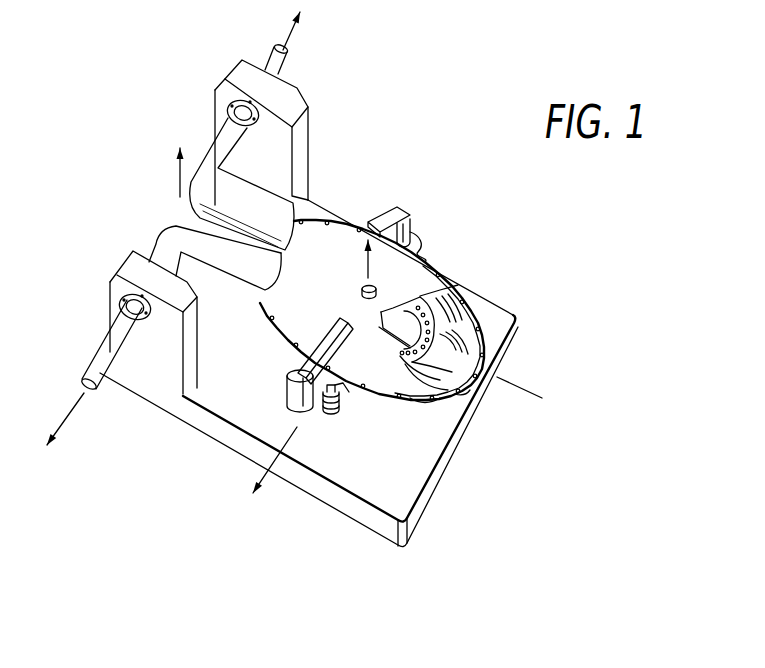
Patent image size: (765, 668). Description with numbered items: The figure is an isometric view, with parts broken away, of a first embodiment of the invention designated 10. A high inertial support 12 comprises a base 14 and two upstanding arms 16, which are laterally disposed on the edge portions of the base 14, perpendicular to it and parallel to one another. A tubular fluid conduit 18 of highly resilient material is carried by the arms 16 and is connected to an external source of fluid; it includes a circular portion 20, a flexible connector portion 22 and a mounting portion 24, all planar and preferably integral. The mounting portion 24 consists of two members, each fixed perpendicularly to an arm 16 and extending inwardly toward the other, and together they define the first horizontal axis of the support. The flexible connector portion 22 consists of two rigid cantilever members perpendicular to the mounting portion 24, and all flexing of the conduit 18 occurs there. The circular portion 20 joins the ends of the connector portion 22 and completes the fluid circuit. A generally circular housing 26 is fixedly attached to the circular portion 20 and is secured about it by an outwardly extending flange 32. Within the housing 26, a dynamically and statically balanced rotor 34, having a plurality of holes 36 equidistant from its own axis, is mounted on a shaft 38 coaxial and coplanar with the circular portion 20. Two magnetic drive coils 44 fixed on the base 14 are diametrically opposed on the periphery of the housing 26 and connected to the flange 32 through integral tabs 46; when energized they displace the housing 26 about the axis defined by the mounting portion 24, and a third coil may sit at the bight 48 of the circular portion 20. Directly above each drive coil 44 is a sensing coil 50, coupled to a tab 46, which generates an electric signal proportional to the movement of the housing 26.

The first embodiment 10 is at (403, 153).
The high inertial support 12 is at (203, 437).
The base 14 is at (405, 548).
The upstanding arms 16 is at (300, 146).
The fluid conduit 18 is at (222, 115).
The circular portion 20 is at (467, 328).
The flexible connector portion 22 is at (243, 262).
The mounting portion 24 is at (193, 186).
The housing 26 is at (407, 262).
The flange 32 is at (470, 390).
The rotor 34 is at (425, 400).
The holes 36 is at (398, 326).
The shaft 38 is at (362, 291).
The drive coils 44 is at (337, 416).
The tabs 46 is at (343, 388).
The bight 48 is at (478, 372).
The sensing coil 50 is at (417, 230).